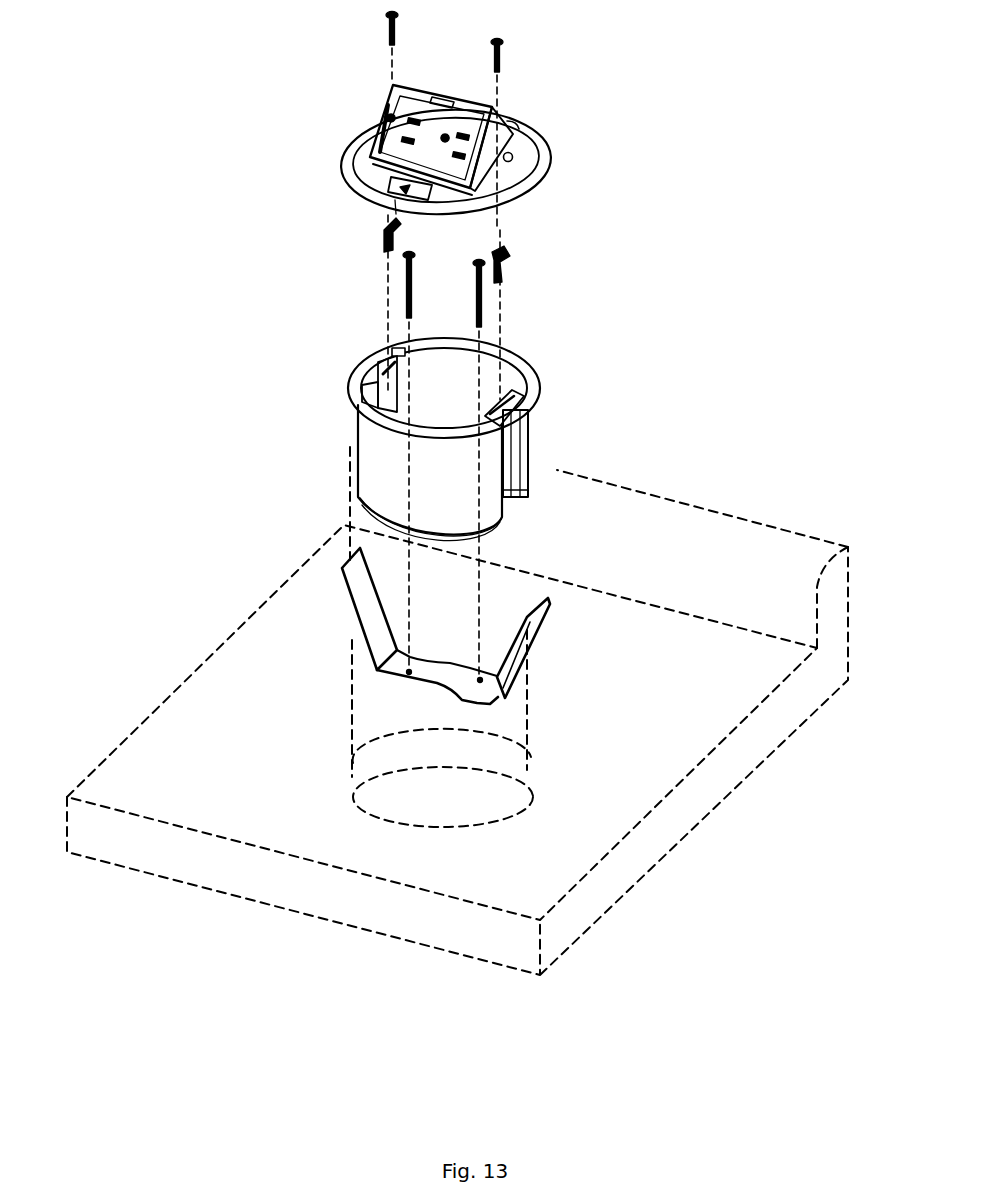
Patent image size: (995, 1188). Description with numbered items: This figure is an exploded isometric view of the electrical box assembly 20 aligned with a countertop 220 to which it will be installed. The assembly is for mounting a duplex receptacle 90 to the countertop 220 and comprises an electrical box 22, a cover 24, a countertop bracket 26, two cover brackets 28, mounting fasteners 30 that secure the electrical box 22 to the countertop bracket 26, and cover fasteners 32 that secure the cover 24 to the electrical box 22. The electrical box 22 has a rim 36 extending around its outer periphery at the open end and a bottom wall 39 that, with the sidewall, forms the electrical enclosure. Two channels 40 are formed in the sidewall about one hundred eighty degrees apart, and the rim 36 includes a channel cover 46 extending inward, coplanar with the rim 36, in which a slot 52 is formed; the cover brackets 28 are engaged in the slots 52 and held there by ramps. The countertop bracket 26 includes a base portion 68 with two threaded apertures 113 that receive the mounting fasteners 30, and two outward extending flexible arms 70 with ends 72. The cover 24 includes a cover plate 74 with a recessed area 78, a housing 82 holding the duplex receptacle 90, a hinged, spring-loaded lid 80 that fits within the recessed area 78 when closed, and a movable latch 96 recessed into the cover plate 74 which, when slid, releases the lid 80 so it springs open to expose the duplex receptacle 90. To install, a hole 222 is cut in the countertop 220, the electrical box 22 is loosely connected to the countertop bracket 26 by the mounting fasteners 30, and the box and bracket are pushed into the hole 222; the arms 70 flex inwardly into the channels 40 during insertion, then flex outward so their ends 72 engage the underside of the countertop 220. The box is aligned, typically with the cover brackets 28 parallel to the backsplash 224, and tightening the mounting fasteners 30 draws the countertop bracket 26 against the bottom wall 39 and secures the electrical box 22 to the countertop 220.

The electrical box assembly 20 is at (266, 143).
The electrical box 22 is at (560, 430).
The cover 24 is at (568, 134).
The countertop bracket 26 is at (550, 661).
The cover brackets 28 is at (512, 258).
The mounting fasteners 30 is at (473, 290).
The cover fasteners 32 is at (503, 53).
The rim 36 is at (513, 357).
The bottom wall 39 is at (490, 533).
The channels 40 is at (507, 467).
The channel cover 46 is at (500, 403).
The slot 52 is at (390, 372).
The base portion 68 is at (433, 680).
The arms 70 is at (364, 600).
The ends 72 is at (362, 563).
The cover plate 74 is at (512, 177).
The recessed area 78 is at (513, 158).
The lid 80 is at (529, 120).
The housing 82 is at (382, 118).
The duplex receptacle 90 is at (430, 132).
The movable latch 96 is at (393, 178).
The apertures 113 is at (407, 674).
The countertop 220 is at (688, 805).
The hole 222 is at (473, 807).
The backsplash 224 is at (711, 582).